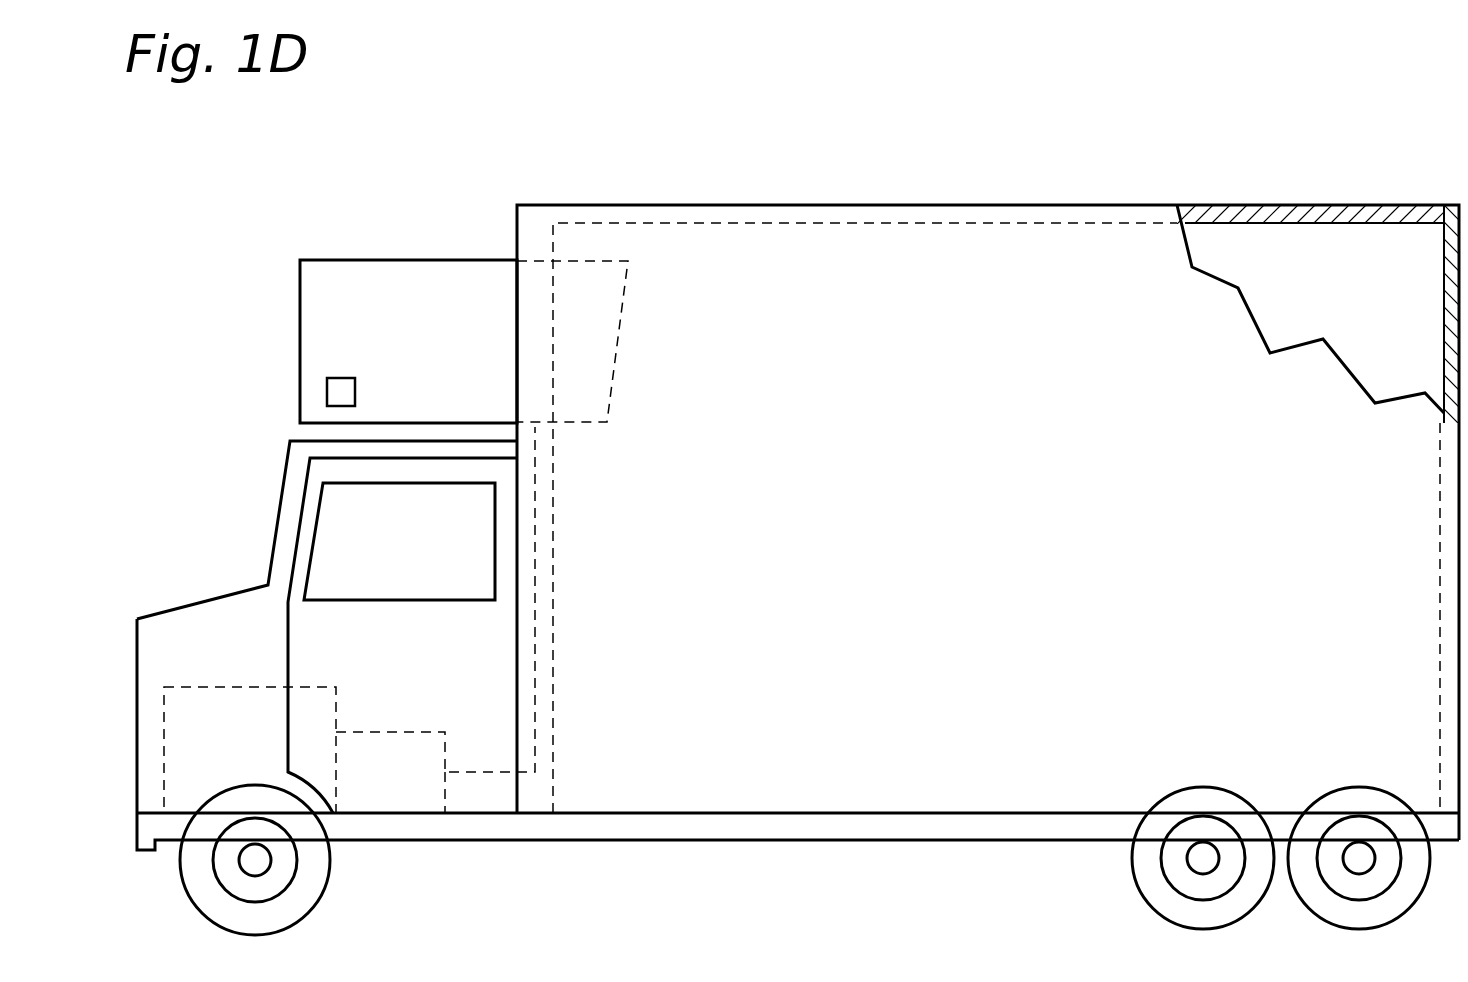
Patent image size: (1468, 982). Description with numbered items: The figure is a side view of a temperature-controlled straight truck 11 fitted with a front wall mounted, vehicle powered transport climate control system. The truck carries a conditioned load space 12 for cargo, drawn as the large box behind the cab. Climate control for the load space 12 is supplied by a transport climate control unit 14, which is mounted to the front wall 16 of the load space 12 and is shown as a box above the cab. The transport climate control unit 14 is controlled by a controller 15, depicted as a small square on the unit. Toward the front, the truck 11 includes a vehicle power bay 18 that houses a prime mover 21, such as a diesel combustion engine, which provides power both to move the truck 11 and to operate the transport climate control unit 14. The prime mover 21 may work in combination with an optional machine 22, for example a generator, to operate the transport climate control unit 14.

The temperature-controlled straight truck 11 is at (1060, 152).
The conditioned load space 12 is at (1265, 258).
The transport climate control unit 14 is at (382, 260).
The controller 15 is at (327, 390).
The front wall 16 is at (553, 283).
The vehicle power bay 18 is at (232, 593).
The prime mover 21 is at (195, 687).
The machine 22 is at (415, 732).